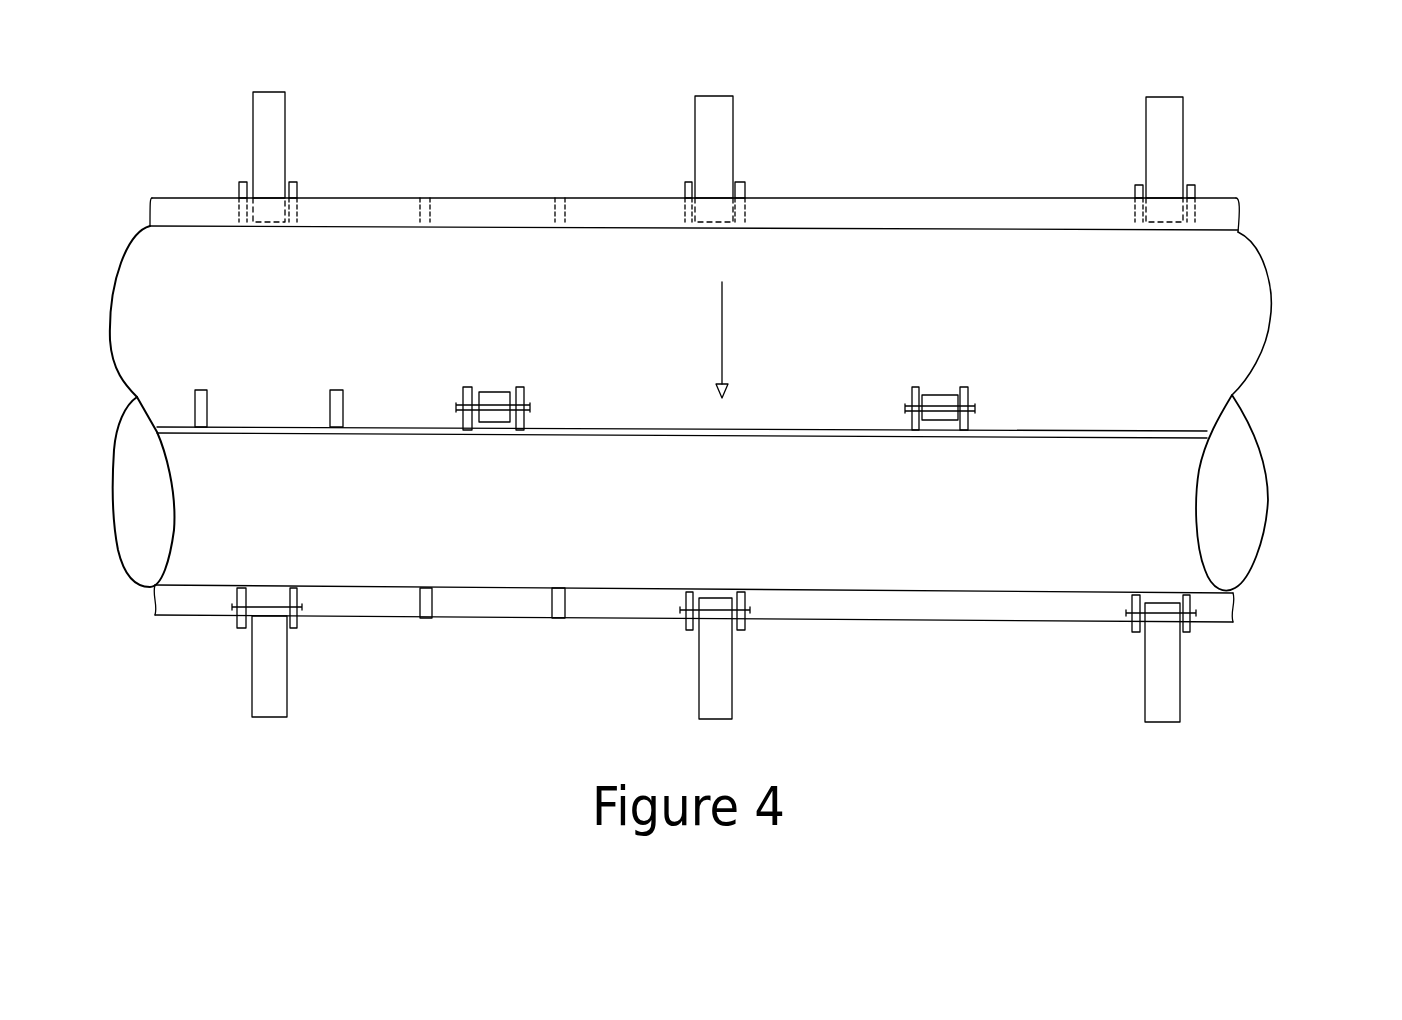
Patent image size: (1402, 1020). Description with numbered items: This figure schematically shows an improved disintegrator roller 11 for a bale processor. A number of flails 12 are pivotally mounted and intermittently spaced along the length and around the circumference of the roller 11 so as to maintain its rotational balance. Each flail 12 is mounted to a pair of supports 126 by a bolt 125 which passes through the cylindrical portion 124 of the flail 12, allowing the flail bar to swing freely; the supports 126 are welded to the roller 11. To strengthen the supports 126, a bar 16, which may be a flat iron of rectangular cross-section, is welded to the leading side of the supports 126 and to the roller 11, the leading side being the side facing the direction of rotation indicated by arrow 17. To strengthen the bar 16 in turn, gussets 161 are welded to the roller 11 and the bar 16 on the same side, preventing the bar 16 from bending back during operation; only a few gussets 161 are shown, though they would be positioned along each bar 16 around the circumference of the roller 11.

The disintegrator roller 11 is at (1350, 281).
The flail 12 is at (395, 112).
The bar 16 is at (895, 162).
The arrow 17 is at (778, 316).
The cylindrical portion 124 is at (492, 395).
The bolt 125 is at (585, 410).
The supports 126 is at (345, 174).
The gussets 161 is at (430, 200).